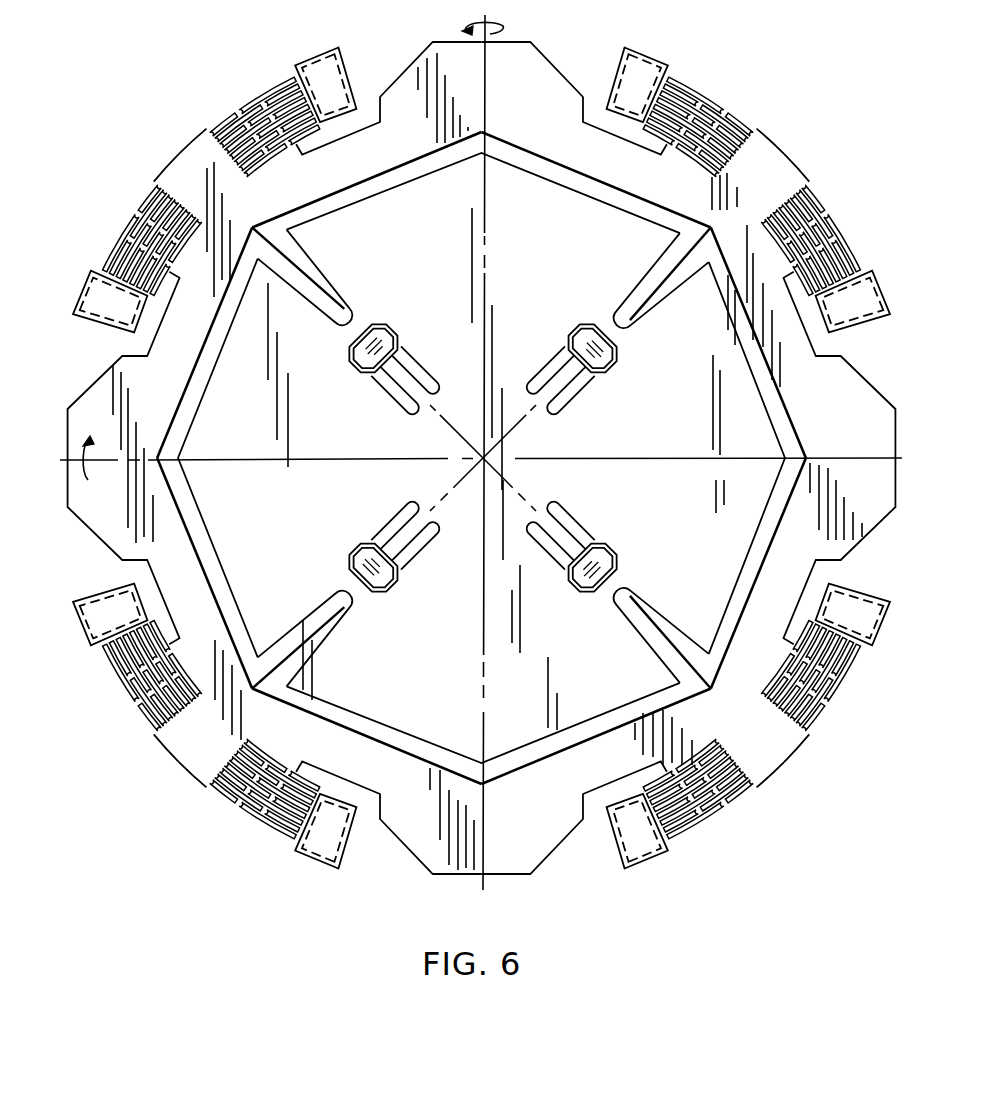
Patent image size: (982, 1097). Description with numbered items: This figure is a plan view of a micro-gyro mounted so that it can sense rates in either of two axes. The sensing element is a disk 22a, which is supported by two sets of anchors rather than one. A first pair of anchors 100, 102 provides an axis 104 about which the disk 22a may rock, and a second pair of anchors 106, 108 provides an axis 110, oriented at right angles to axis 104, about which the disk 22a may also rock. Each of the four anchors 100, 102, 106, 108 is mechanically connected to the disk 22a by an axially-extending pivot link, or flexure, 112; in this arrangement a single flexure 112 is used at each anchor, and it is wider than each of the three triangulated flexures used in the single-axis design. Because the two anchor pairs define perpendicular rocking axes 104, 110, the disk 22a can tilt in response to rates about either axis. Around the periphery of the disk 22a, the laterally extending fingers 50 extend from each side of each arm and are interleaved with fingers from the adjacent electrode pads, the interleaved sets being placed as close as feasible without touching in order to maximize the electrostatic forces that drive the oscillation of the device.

The disk 22a is at (223, 492).
The laterally extending fingers 50 is at (487, 108).
The anchor 100 is at (616, 358).
The anchor 102 is at (379, 590).
The axis 104 is at (521, 419).
The anchor 106 is at (619, 562).
The anchor 108 is at (352, 360).
The axis 110 is at (453, 425).
The pivot link (flexure) 112 is at (400, 357).